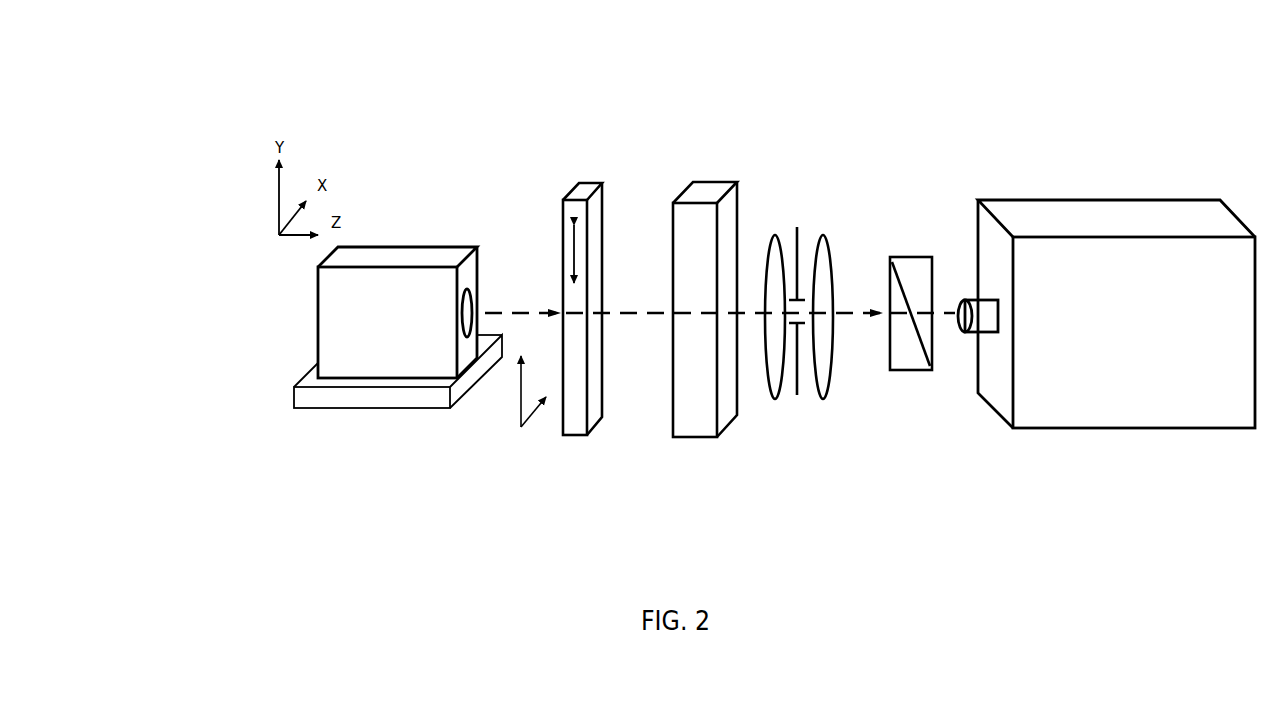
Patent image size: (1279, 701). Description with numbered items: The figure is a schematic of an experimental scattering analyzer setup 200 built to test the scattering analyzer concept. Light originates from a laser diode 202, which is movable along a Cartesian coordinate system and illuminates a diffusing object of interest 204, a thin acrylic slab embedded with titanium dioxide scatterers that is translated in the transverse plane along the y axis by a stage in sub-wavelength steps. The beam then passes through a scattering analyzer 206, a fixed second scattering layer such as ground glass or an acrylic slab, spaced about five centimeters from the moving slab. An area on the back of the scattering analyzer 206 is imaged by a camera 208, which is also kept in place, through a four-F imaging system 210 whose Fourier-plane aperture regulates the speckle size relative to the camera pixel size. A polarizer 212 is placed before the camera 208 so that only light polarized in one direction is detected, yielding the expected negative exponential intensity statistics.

The experimental scattering analyzer setup 200 is at (165, 56).
The laser diode 202 is at (284, 269).
The diffusing object of interest 204 is at (541, 175).
The scattering analyzer 206 is at (696, 170).
The camera 208 is at (1078, 185).
The 4F system 210 is at (804, 177).
The polarizer 212 is at (907, 218).